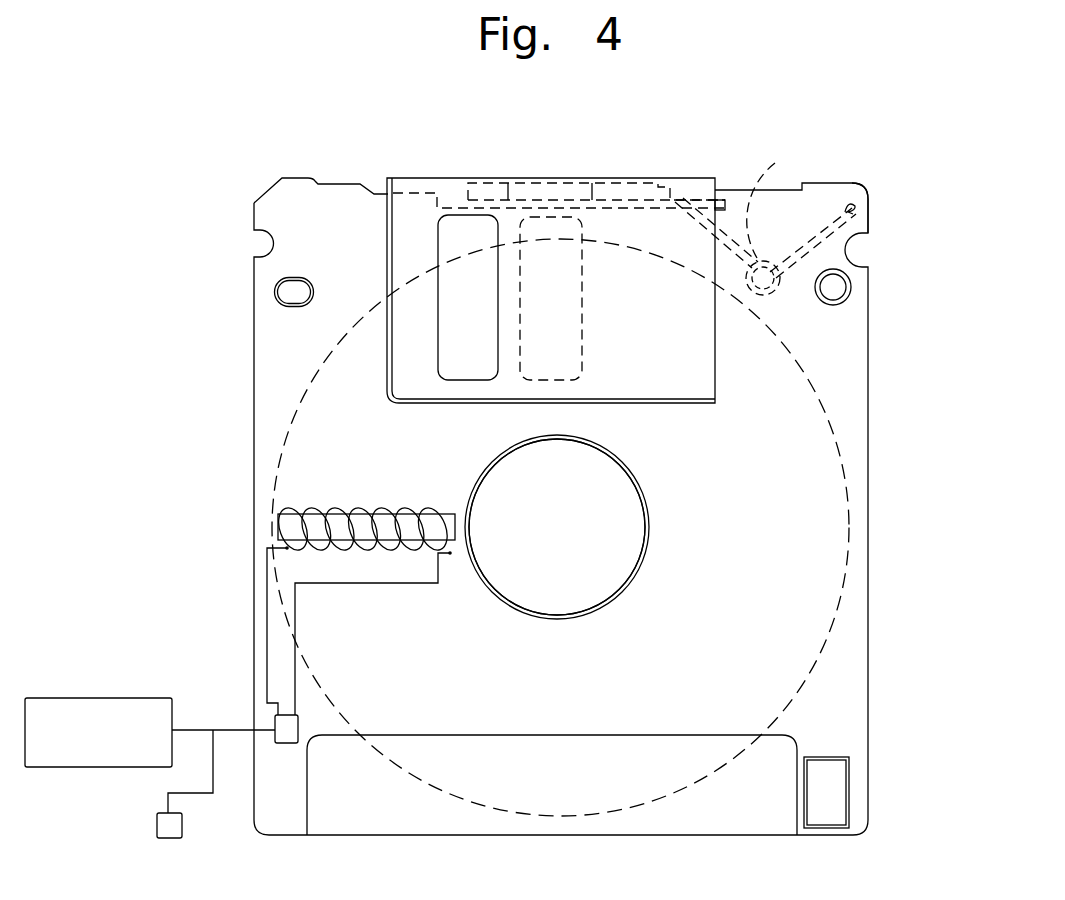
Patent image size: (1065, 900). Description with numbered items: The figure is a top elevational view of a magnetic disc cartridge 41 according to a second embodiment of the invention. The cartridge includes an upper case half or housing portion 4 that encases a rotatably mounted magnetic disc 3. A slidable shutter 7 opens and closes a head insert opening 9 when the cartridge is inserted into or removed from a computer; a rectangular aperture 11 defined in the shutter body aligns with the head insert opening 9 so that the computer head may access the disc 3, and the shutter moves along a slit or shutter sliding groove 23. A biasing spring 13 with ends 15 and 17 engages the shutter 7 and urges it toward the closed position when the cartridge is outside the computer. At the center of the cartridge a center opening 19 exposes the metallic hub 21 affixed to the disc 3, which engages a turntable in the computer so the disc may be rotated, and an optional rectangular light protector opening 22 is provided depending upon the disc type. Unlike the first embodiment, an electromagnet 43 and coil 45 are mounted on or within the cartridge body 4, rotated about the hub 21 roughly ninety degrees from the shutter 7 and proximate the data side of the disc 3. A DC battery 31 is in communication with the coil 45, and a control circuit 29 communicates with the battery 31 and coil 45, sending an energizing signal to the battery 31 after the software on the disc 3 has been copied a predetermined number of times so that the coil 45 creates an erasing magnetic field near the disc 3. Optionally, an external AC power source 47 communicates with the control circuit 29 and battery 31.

The magnetic disc 3 is at (848, 488).
The upper case half 4 is at (867, 640).
The shutter 7 is at (682, 182).
The head insert opening 9 is at (582, 346).
The rectangular aperture 11 is at (473, 343).
The biasing spring 13 is at (823, 253).
The spring end 15 is at (868, 220).
The spring end 17 is at (772, 163).
The center opening 19 is at (647, 500).
The metallic hub 21 is at (590, 572).
The rectangular light protector opening 22 is at (833, 780).
The shutter sliding groove 23 is at (602, 202).
The control circuit 29 is at (163, 823).
The DC battery 31 is at (300, 745).
The magnetic disc cartridge 41 is at (225, 362).
The electromagnet 43 is at (318, 525).
The coil 45 is at (368, 512).
The external AC power source 47 is at (50, 700).